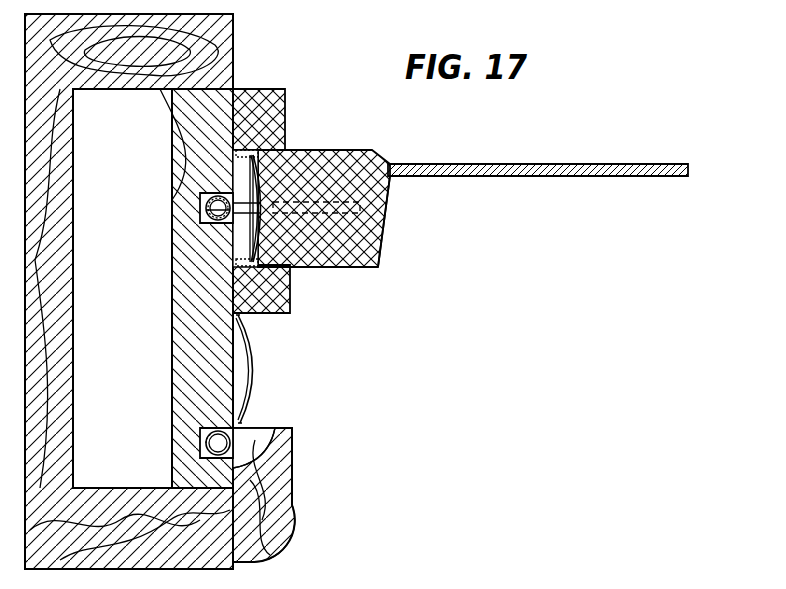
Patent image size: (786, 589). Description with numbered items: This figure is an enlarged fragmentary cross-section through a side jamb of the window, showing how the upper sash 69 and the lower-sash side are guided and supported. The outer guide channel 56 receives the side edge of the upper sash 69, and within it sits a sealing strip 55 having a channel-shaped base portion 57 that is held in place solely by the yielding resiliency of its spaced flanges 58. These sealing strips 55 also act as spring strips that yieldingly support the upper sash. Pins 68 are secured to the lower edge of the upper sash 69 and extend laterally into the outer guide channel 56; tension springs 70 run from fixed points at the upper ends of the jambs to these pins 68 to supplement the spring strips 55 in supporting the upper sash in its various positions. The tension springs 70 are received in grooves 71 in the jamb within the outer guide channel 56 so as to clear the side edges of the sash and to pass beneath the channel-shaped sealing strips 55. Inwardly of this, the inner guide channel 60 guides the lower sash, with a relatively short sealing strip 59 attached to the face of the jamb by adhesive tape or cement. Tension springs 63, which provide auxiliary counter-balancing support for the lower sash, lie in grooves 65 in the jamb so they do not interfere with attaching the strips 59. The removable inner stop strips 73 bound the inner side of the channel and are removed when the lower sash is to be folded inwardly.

The sealing strips 55 is at (295, 150).
The outer guide channels 56 is at (292, 270).
The channel-shaped base portions 57 is at (247, 232).
The spaced flanges 58 is at (236, 158).
The sealing strips 59 is at (248, 380).
The inner guide channels 60 is at (270, 428).
The tension springs 63 is at (206, 445).
The grooves 65 is at (203, 432).
The pins 68 is at (388, 192).
The upper sash 69 is at (382, 253).
The tension springs 70 is at (210, 220).
The grooves 71 is at (206, 203).
The inner stop strips 73 is at (293, 488).